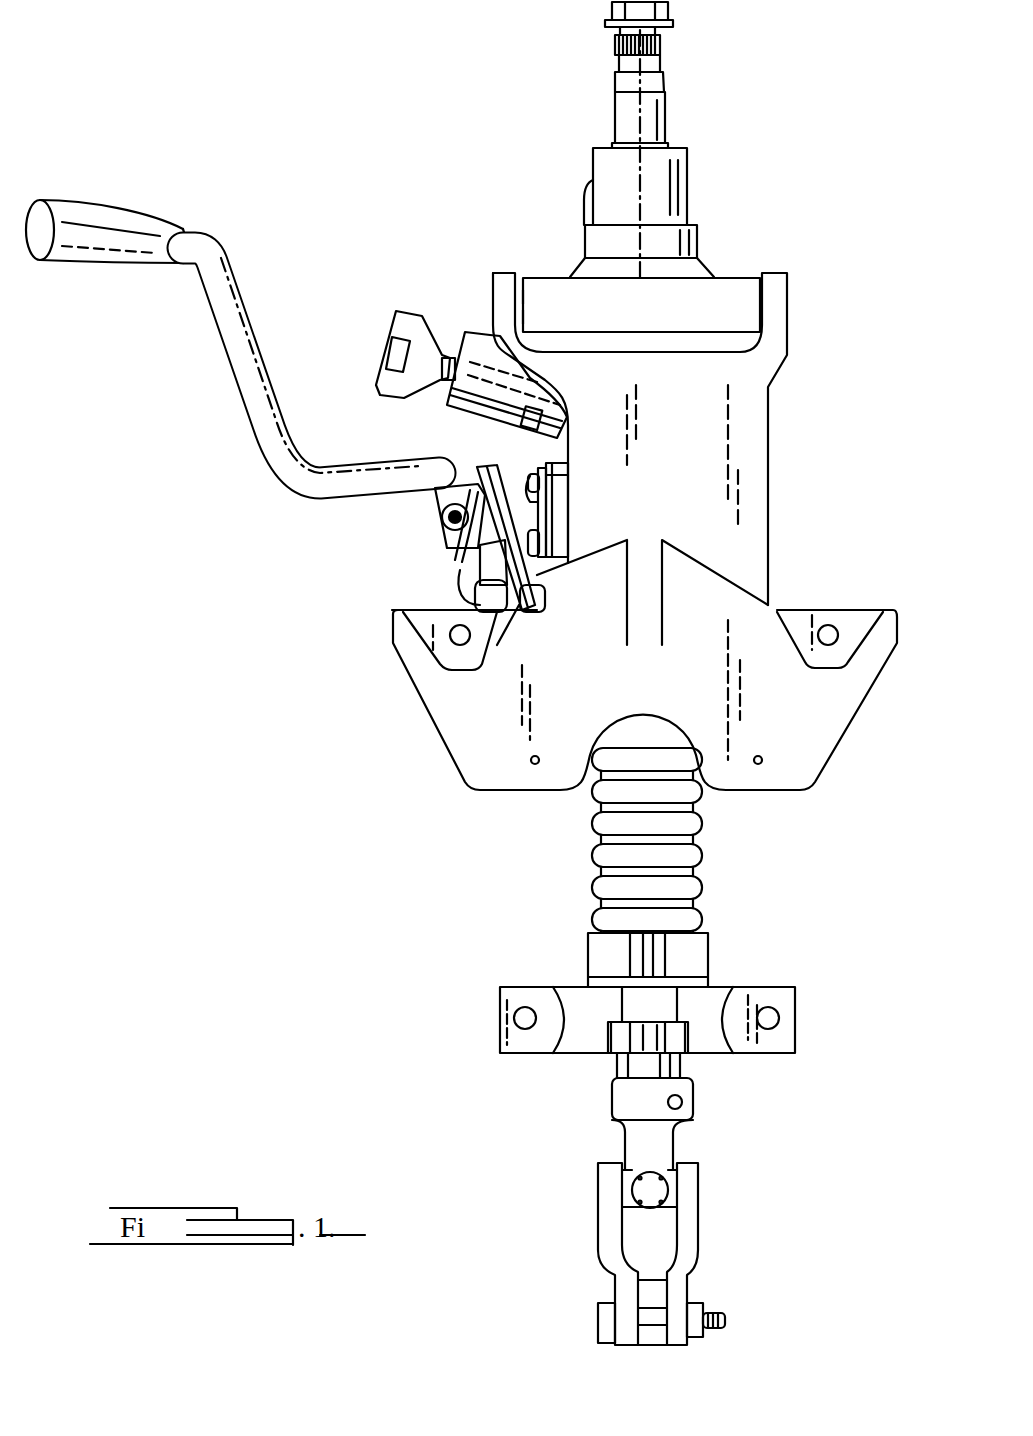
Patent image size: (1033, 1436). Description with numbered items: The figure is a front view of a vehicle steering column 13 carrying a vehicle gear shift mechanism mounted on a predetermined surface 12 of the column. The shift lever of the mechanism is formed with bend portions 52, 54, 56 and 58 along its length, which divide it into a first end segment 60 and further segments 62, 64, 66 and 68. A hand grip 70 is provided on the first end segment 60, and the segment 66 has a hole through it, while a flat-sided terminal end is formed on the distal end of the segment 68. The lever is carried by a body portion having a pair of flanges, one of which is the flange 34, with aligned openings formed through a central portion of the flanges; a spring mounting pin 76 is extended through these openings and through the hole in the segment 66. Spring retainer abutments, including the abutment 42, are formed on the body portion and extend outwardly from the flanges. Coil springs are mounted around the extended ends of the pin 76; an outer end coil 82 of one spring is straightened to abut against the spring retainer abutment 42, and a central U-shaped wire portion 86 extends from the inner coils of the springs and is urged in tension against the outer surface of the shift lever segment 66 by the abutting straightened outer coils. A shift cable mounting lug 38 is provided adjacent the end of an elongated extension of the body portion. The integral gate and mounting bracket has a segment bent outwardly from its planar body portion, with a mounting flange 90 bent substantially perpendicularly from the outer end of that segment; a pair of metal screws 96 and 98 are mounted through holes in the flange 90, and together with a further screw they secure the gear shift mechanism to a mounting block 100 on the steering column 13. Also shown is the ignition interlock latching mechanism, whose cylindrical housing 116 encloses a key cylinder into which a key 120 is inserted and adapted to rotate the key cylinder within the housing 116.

The predetermined surface 12 is at (566, 497).
The steering column 13 is at (772, 416).
The flange 34 is at (420, 523).
The shift cable mounting lug 38 is at (512, 618).
The spring retainer abutment 42 is at (482, 467).
The bend portion 52 is at (312, 350).
The bend portion 54 is at (312, 350).
The bend portion 56 is at (312, 327).
The bend portion 58 is at (478, 598).
The first end segment 60 is at (178, 230).
The segment 62 is at (236, 350).
The segment 64 is at (312, 350).
The segment 66 is at (470, 580).
The segment 68 is at (505, 600).
The hand grip 70 is at (96, 266).
The spring mounting pin 76 is at (440, 516).
The outer end coil 82 is at (436, 497).
The central U-shaped wire portion 86 is at (458, 560).
The mounting flange 90 is at (552, 505).
The metal screw 96 is at (530, 480).
The metal screw 98 is at (540, 536).
The mounting block 100 is at (548, 480).
The cylindrical housing 116 is at (479, 338).
The key 120 is at (405, 311).